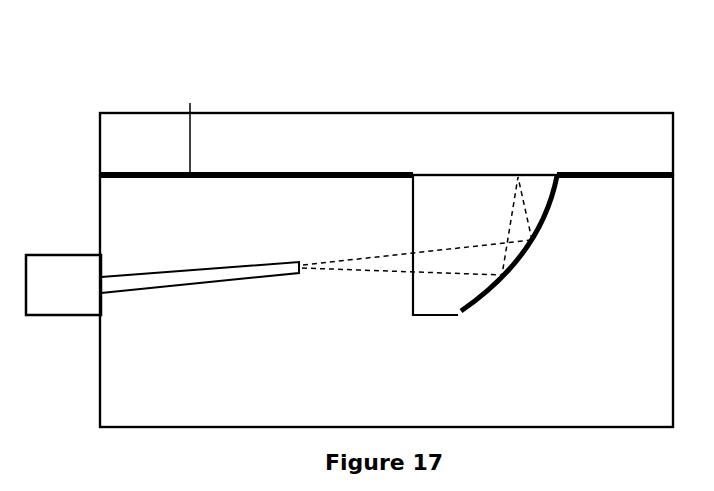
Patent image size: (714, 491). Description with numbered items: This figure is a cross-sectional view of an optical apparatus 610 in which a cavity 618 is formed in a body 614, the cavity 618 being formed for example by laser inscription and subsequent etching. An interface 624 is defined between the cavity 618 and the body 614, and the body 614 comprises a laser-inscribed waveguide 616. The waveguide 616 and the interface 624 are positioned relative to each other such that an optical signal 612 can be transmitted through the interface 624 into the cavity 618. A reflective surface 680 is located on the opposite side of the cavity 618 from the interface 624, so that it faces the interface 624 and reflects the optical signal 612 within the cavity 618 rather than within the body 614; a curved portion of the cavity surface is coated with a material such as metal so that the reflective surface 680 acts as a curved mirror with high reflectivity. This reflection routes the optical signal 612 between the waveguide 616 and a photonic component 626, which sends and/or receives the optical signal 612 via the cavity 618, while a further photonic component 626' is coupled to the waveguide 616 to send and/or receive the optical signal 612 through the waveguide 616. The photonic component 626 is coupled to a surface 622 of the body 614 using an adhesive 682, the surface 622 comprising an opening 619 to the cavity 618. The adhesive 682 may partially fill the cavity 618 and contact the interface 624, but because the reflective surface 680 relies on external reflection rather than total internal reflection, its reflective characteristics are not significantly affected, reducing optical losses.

The optical apparatus 610 is at (72, 77).
The photonic component 626 is at (353, 144).
The body 614 is at (110, 203).
The adhesive 682 is at (191, 126).
The surface 622 is at (283, 172).
The opening 619 is at (435, 176).
The cavity 618 is at (470, 224).
The reflective surface 680 is at (551, 197).
The interface 624 is at (417, 289).
The further photonic component 626' is at (63, 285).
The laser-inscribed waveguide 616 is at (180, 273).
The optical signal 612 is at (417, 241).